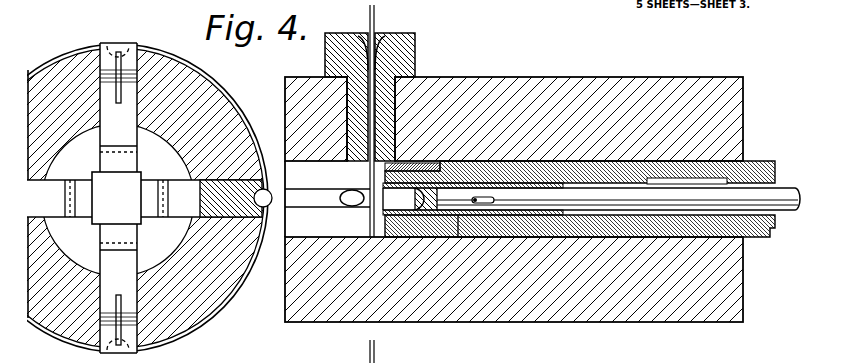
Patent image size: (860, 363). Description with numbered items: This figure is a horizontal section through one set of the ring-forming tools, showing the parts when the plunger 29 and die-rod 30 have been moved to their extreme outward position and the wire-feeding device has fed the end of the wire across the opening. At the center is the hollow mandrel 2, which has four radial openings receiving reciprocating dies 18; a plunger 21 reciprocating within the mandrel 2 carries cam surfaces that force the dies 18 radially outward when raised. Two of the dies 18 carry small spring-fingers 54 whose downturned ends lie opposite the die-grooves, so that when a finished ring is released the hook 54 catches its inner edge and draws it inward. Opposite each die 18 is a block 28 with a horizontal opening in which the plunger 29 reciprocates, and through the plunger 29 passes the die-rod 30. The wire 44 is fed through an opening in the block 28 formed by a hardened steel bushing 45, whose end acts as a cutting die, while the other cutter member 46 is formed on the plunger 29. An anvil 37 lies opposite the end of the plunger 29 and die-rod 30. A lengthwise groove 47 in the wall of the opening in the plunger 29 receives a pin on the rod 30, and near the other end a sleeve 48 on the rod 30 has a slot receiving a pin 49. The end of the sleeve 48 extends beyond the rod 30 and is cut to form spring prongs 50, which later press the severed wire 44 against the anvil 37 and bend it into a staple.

The mandrel 2 is at (213, 295).
The dies 18 is at (193, 343).
The plunger 21 is at (130, 214).
The spring-fingers 54 is at (120, 100).
The block 28 is at (661, 322).
The plunger 29 is at (743, 163).
The die-rod 30 is at (618, 199).
The anvil 37 is at (347, 193).
The wire 44 is at (375, 22).
The bushing 45 is at (338, 62).
The cutting member 46 is at (398, 163).
The groove 47 is at (765, 223).
The sleeve 48 is at (459, 216).
The pin 49 is at (474, 203).
The prongs 50 is at (390, 211).